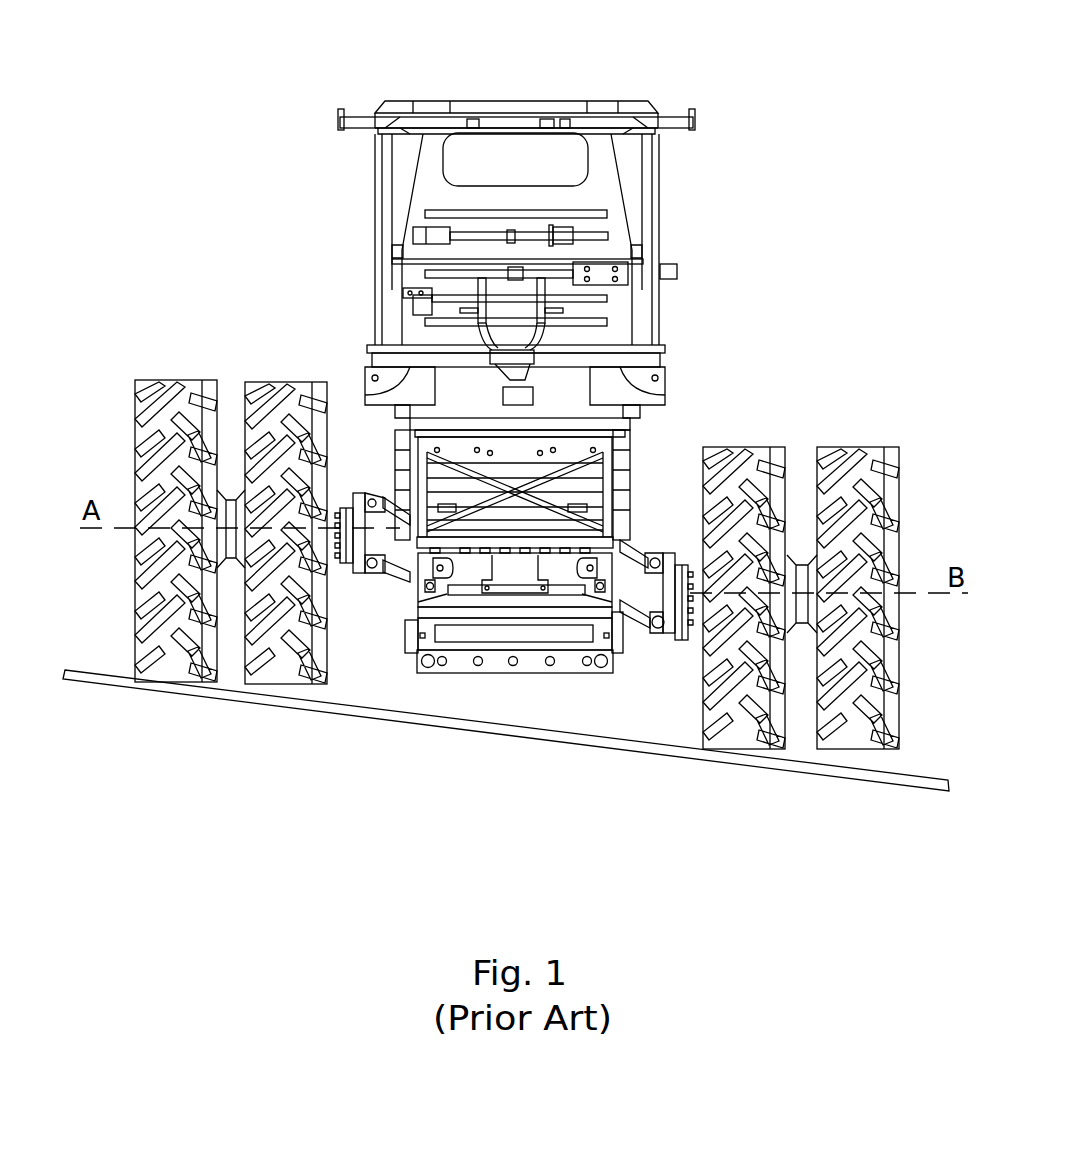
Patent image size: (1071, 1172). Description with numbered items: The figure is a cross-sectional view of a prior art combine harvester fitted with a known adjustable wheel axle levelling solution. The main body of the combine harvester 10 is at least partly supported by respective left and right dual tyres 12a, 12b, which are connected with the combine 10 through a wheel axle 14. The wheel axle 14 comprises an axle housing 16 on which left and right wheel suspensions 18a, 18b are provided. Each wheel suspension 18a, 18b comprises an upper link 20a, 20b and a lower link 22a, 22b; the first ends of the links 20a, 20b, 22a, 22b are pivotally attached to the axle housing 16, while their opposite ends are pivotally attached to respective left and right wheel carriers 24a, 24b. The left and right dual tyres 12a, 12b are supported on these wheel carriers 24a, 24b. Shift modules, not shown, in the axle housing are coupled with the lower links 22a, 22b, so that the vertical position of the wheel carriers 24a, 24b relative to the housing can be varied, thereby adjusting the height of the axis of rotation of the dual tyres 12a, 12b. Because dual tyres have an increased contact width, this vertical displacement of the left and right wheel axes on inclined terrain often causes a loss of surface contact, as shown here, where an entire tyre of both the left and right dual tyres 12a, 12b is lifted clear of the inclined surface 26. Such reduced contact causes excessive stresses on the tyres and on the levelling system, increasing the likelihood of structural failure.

The main body of the combine harvester 10 is at (600, 117).
The left dual tyres 12a is at (272, 380).
The right dual tyres 12b is at (855, 447).
The wheel axle 14 is at (512, 619).
The axle housing 16 is at (530, 676).
The left wheel suspension 18a is at (357, 603).
The right wheel suspension 18b is at (640, 636).
The upper link 20a is at (392, 505).
The upper link 20b is at (645, 550).
The lower link 22a is at (396, 580).
The lower link 22b is at (640, 622).
The left wheel carrier 24a is at (315, 633).
The right wheel carrier 24b is at (683, 638).
The inclined surface 26 is at (795, 768).